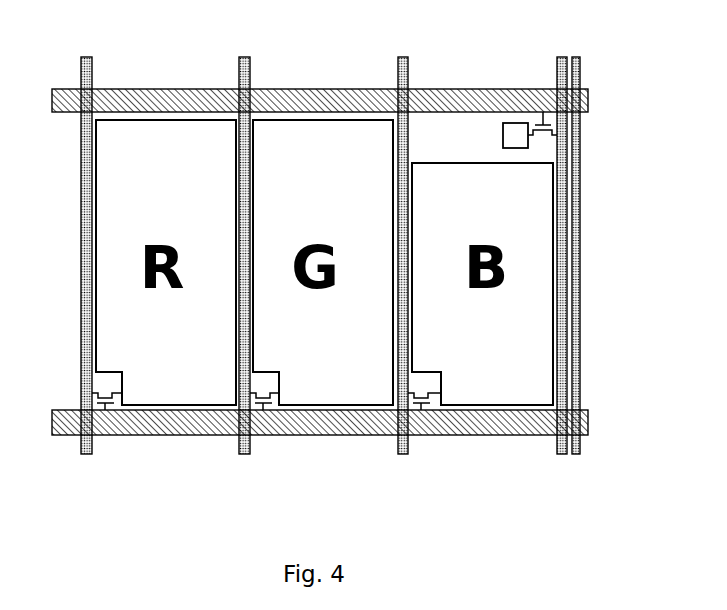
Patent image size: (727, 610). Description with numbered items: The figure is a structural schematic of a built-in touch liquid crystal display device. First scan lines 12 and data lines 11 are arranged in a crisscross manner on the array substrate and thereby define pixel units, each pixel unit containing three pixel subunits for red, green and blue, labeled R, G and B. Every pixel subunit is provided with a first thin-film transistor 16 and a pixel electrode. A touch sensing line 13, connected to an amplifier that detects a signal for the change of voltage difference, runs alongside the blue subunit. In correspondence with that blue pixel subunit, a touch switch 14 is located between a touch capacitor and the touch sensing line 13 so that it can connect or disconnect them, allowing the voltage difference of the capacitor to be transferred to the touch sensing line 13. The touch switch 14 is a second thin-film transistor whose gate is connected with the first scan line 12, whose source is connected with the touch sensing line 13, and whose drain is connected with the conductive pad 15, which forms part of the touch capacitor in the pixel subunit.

The data line 11 is at (250, 64).
The first scan line 12 is at (486, 85).
The touch sensing line 13 is at (557, 66).
The touch switch 14 is at (583, 157).
The conductive pad 15 is at (502, 127).
The first thin-film transistor 16 is at (437, 438).